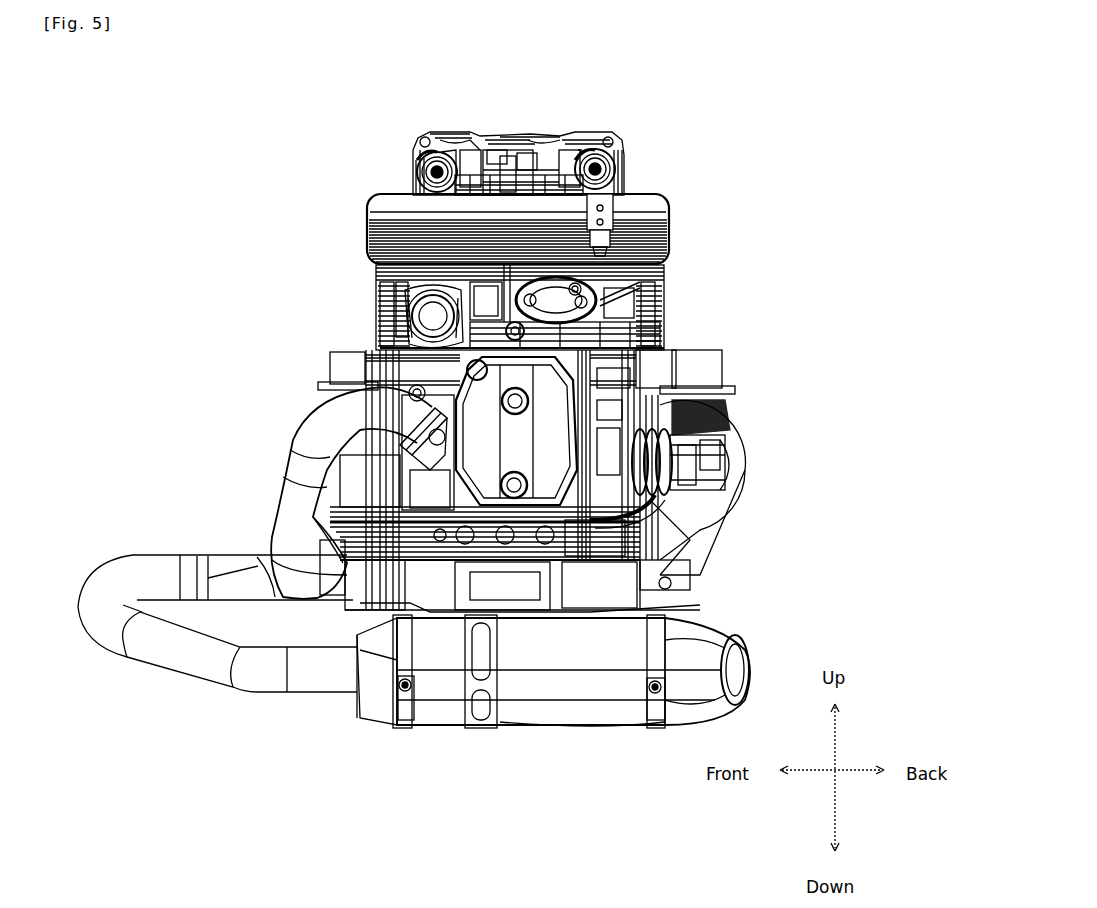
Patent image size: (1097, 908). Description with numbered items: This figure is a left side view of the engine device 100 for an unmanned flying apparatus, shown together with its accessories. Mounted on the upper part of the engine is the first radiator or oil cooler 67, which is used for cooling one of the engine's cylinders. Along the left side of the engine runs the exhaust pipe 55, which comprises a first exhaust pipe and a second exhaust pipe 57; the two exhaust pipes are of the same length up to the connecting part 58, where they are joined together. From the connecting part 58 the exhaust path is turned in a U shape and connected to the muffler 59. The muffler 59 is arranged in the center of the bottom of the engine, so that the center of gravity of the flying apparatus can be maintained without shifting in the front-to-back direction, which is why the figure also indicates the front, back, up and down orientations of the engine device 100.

The engine device for an unmanned flying apparatus 100 is at (683, 125).
The first radiator or oil cooler 67 is at (672, 238).
The second exhaust pipe 57 is at (306, 418).
The exhaust pipe 55 is at (218, 482).
The connecting part 58 is at (227, 556).
The muffler 59 is at (442, 728).